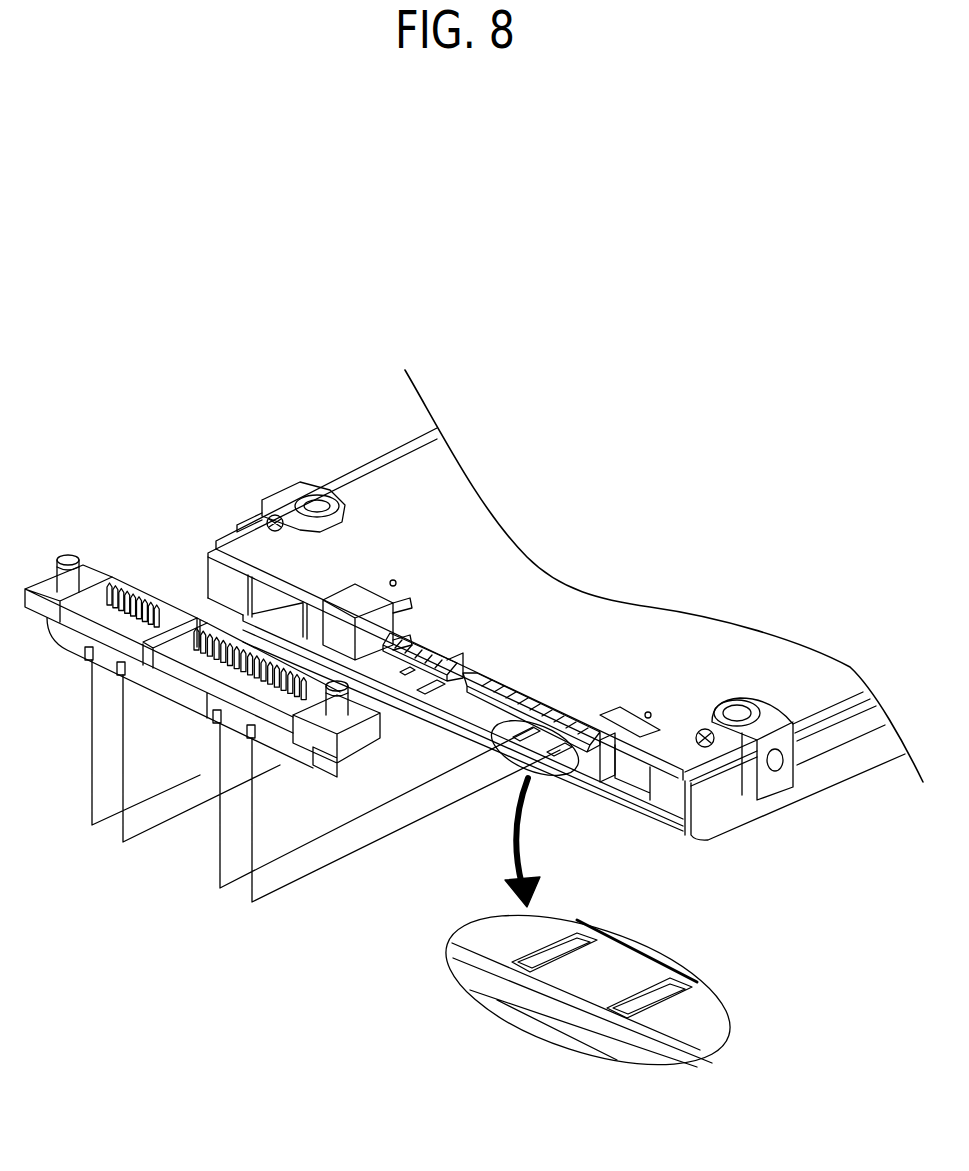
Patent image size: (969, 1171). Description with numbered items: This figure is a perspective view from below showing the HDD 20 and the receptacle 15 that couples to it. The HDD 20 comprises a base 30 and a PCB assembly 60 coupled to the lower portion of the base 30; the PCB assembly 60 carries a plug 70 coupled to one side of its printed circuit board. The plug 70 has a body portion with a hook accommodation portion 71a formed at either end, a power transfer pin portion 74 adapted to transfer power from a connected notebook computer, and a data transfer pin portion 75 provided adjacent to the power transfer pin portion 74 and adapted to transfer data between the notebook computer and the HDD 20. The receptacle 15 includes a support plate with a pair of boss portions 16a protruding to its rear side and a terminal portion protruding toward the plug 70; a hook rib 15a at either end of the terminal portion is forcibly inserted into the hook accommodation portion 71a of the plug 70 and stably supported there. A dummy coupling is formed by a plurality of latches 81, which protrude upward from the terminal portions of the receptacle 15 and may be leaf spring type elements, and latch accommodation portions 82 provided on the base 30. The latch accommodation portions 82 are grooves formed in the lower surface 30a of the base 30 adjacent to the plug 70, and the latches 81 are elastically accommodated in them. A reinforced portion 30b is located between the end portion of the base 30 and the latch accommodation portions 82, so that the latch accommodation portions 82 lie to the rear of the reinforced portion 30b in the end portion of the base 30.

The HDD 20 is at (369, 436).
The PCB assembly 60 is at (488, 522).
The base 30 is at (830, 747).
The lower surface 30a is at (598, 770).
The reinforced portion 30b is at (480, 992).
The latch accommodation portions 82 is at (430, 700).
The latches 81 is at (83, 660).
The hook accommodation portion 71a is at (383, 620).
The data transfer pin portion 75 is at (430, 643).
The power transfer pin portion 74 is at (515, 685).
The plug 70 is at (626, 718).
The receptacle 15 is at (141, 558).
The hook rib 15a is at (325, 768).
The boss portions 16a is at (63, 557).